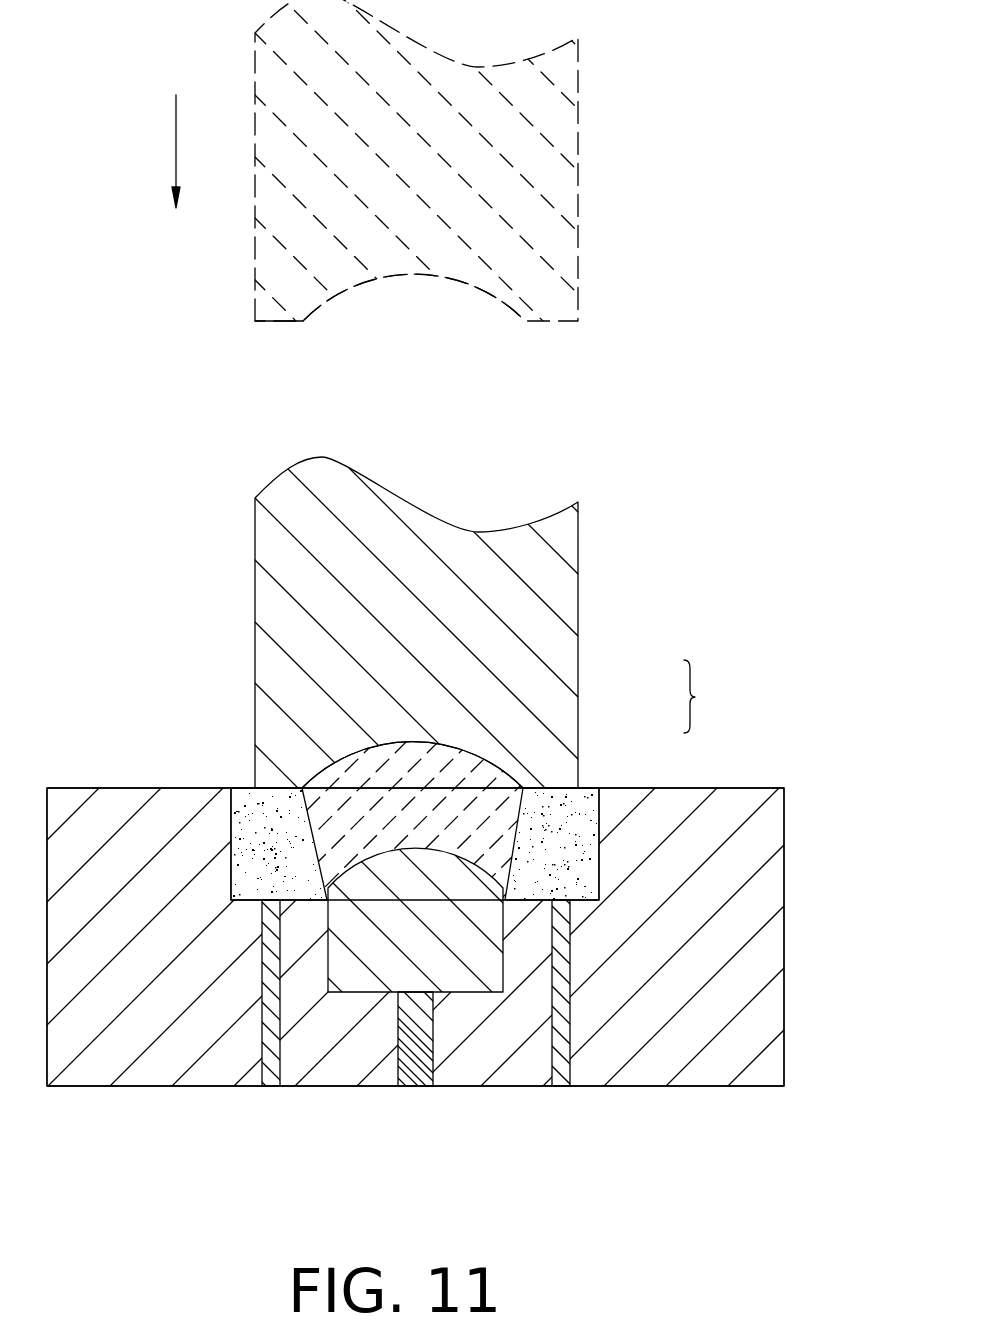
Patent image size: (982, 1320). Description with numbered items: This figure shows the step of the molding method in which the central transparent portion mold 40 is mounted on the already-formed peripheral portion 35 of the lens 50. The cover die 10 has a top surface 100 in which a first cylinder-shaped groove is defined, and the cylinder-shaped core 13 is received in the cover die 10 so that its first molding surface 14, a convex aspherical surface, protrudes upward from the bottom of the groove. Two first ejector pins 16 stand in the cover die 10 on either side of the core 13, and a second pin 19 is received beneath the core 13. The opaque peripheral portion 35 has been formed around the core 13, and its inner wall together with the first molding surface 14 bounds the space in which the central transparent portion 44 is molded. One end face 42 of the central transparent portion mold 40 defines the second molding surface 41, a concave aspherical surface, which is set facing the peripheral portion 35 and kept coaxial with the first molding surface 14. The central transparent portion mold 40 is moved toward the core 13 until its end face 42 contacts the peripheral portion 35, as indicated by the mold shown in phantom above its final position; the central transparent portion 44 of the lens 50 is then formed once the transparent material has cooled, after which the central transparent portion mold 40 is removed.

The cover die 10 is at (747, 980).
The core 13 is at (462, 973).
The first molding surface 14 is at (385, 853).
The first ejector pins 16 is at (275, 1060).
The second pin 19 is at (410, 1065).
The peripheral portion 35 is at (568, 813).
The central transparent portion mold 40 is at (543, 155).
The second molding surface 41 is at (453, 277).
The end face 42 is at (280, 321).
The central transparent portion 44 is at (470, 775).
The lens 50 is at (711, 696).
The top surface 100 is at (135, 788).